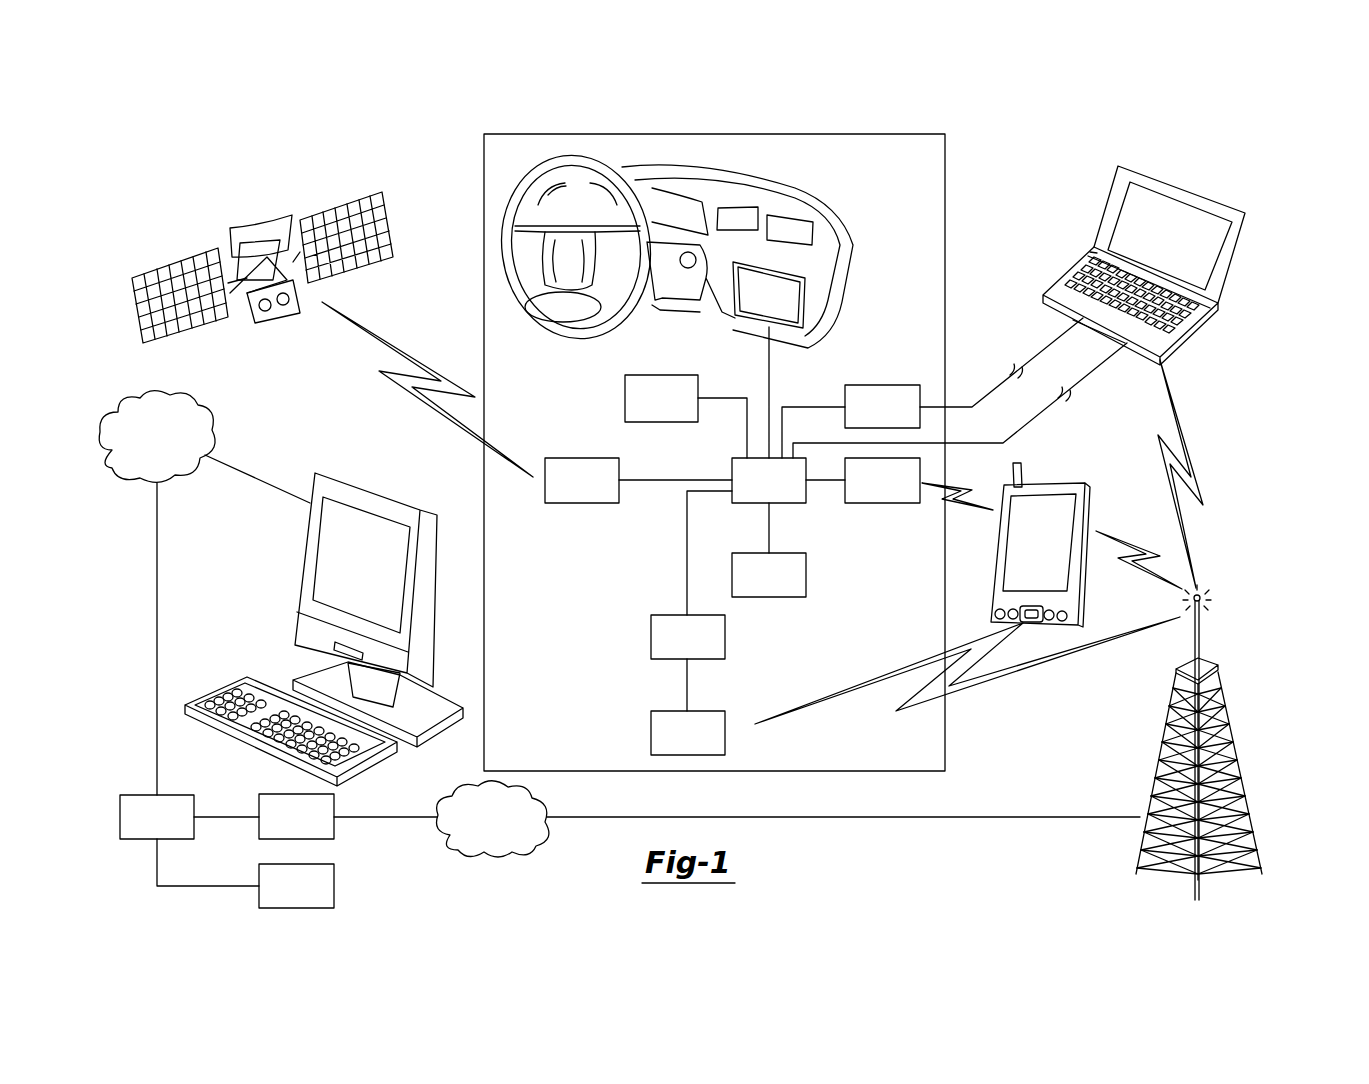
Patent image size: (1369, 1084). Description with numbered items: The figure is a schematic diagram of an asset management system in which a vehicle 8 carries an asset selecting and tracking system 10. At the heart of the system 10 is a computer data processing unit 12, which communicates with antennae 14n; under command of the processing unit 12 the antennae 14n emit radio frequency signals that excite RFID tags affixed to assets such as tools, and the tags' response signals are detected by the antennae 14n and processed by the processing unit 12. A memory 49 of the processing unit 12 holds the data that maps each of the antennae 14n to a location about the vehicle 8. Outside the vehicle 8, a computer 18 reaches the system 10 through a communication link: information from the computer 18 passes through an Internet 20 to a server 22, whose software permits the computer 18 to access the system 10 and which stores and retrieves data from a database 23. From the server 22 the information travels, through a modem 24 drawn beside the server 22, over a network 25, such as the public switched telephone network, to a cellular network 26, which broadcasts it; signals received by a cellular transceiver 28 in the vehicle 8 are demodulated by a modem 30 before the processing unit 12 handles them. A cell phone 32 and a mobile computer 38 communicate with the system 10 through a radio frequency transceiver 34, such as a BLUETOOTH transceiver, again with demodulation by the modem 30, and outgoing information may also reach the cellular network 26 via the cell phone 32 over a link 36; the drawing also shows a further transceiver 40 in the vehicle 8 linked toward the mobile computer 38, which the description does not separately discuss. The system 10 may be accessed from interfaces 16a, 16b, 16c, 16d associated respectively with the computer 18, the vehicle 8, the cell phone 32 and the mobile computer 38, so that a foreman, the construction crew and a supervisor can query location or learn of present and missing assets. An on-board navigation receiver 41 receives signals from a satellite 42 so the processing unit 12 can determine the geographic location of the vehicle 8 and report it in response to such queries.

The vehicle 8 is at (745, 452).
The asset selecting and tracking system 10 is at (845, 538).
The computer data processing unit 12 is at (747, 503).
The antennae 14n is at (785, 553).
The interface 16a is at (332, 548).
The interface 16b is at (757, 311).
The interface 16c is at (1055, 572).
The interface 16d is at (1200, 262).
The computer 18 is at (324, 629).
The Internet 20 is at (200, 405).
The server 22 is at (120, 817).
The database 23 is at (334, 886).
The server modem 24 is at (334, 833).
The network 25 is at (452, 797).
The cellular network 26 is at (1240, 748).
The cellular transceiver 28 is at (651, 732).
The modem 30 is at (651, 637).
The cell phone 32 is at (1053, 545).
The radio frequency transceiver 34 is at (882, 503).
The link 36 is at (1135, 548).
The mobile computer 38 is at (1167, 254).
The transceiver 40 is at (882, 385).
The receiver 41 is at (584, 458).
The satellite 42 is at (268, 222).
The memory 49 is at (662, 375).